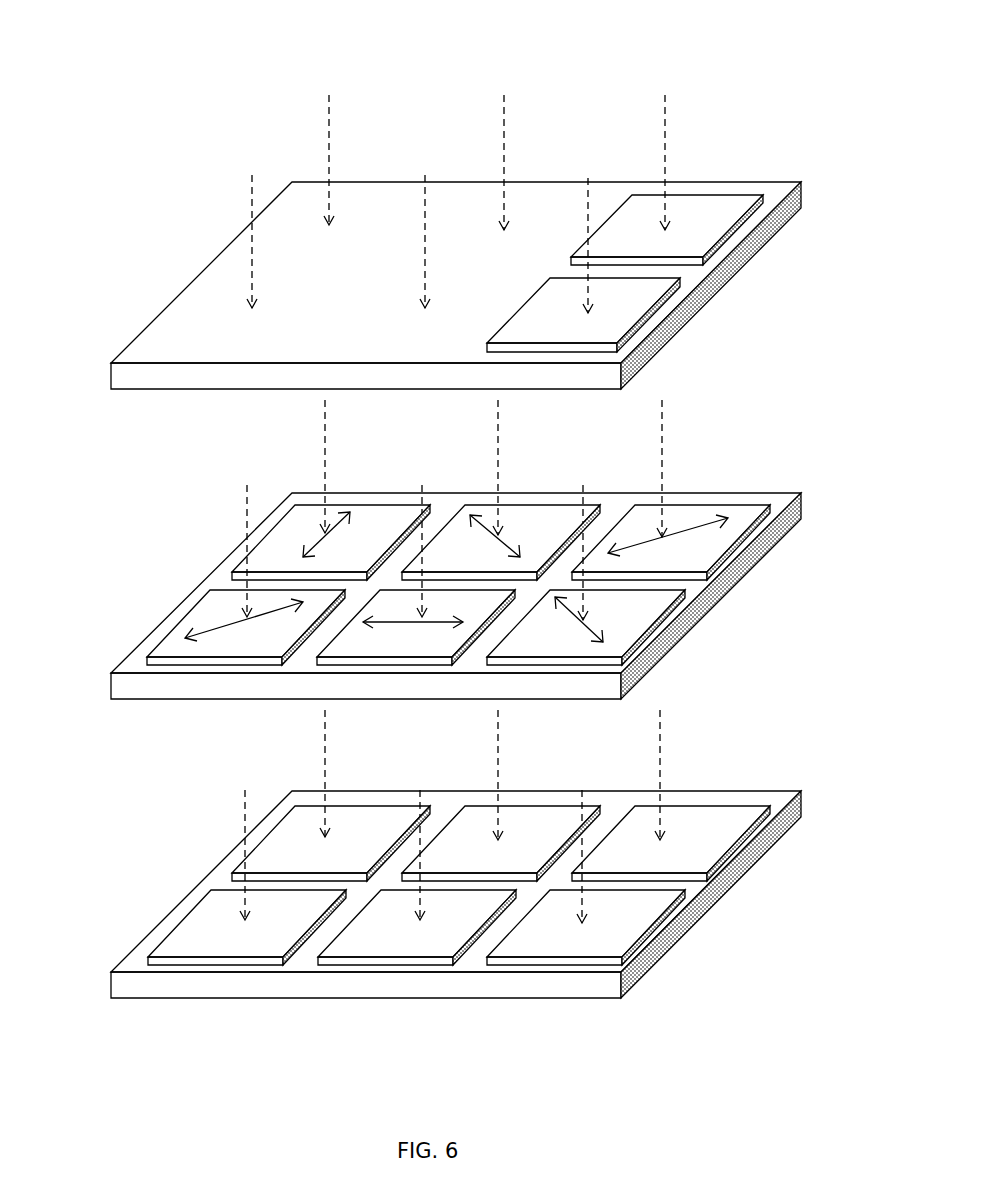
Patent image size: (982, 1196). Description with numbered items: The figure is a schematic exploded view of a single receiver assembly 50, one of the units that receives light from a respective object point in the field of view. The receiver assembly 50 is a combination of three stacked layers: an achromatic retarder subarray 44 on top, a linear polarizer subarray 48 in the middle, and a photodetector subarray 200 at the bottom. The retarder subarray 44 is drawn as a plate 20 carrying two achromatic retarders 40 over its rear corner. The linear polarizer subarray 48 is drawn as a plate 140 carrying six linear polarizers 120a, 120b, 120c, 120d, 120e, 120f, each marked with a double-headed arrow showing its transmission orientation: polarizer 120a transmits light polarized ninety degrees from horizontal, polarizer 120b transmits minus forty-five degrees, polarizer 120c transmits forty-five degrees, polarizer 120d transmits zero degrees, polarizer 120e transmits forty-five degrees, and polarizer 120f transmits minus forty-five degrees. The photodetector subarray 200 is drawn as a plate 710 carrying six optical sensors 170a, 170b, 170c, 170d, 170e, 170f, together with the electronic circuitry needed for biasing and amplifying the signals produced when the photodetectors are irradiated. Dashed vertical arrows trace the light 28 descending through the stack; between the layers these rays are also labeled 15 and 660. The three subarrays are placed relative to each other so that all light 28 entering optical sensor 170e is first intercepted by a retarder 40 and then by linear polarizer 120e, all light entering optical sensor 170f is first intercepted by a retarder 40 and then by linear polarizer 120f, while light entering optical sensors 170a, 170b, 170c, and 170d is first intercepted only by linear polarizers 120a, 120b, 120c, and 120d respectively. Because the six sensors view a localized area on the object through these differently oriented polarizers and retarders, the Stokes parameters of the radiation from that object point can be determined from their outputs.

The receiver assembly 50 is at (425, 28).
The light 28 is at (458, 204).
The achromatic retarder subarray 44 is at (215, 212).
The substrate 20 is at (190, 378).
The achromatic retarder 40 is at (607, 317).
The linear polarizer subarray 48 is at (225, 526).
The light beams 15 is at (454, 510).
The substrate 140 is at (200, 687).
The linear polarizer 120a is at (307, 522).
The linear polarizer 120b is at (467, 522).
The linear polarizer 120c is at (213, 613).
The linear polarizer 120d is at (368, 640).
The linear polarizer 120e is at (688, 545).
The linear polarizer 120f is at (622, 620).
The photodetector subarray 200 is at (227, 831).
The light beams 660 is at (452, 816).
The substrate 710 is at (205, 983).
The optical sensor 170a is at (300, 835).
The optical sensor 170b is at (470, 835).
The optical sensor 170c is at (205, 933).
The optical sensor 170d is at (370, 935).
The optical sensor 170e is at (675, 843).
The optical sensor 170f is at (605, 920).